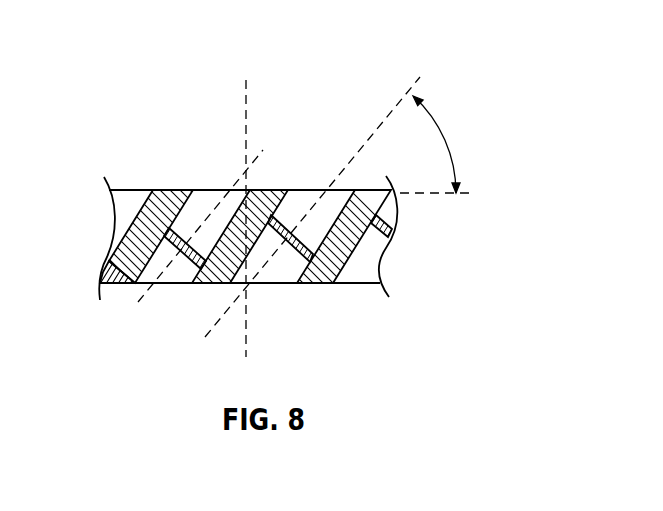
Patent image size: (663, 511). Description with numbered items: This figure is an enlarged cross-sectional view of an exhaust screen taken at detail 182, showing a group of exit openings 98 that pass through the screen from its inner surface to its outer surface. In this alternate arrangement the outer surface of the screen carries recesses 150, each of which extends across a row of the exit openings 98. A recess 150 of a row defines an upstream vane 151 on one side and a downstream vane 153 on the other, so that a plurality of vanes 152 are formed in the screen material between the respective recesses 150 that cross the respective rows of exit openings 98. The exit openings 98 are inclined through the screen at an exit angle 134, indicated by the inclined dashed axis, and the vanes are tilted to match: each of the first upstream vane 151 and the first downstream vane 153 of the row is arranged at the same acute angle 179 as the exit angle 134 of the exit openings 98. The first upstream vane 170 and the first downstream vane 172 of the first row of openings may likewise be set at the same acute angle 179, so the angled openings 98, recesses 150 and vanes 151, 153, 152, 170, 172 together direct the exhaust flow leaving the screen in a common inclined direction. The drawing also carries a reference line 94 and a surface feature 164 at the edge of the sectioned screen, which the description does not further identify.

The detail 182 is at (107, 65).
The upstream vane 151 is at (151, 190).
The downstream vane 153 is at (272, 188).
The vanes 152 is at (388, 185).
The end face 164 is at (383, 251).
The first upstream vane 170 is at (269, 214).
The first downstream vane 172 is at (377, 215).
The recess 150 is at (203, 191).
The exit openings 98 is at (165, 283).
The vertical axis 94 is at (246, 88).
The exit angle 134 is at (272, 261).
The acute angle 179 is at (455, 143).